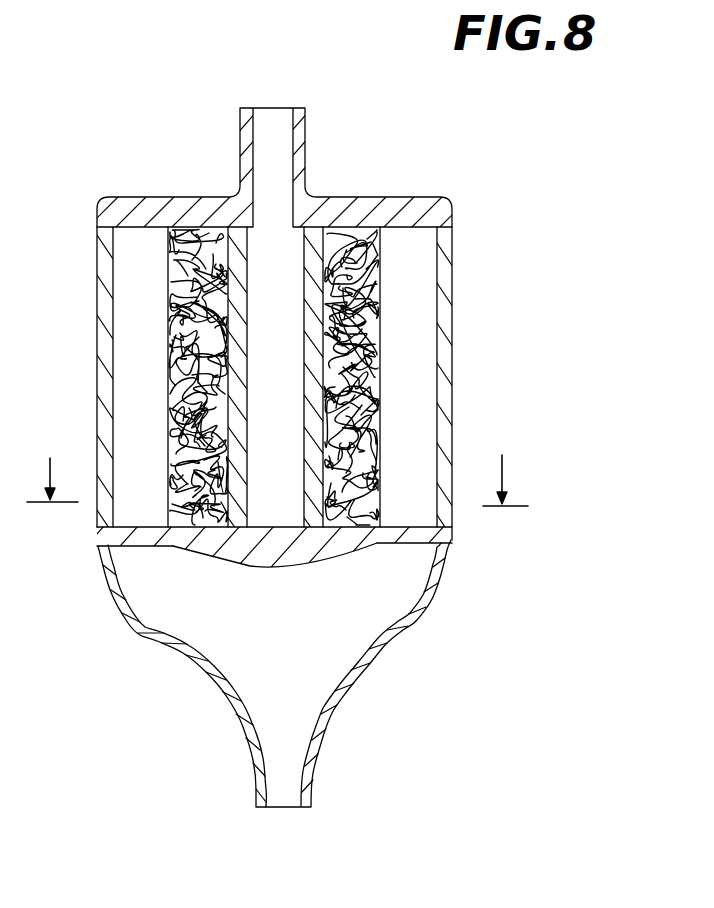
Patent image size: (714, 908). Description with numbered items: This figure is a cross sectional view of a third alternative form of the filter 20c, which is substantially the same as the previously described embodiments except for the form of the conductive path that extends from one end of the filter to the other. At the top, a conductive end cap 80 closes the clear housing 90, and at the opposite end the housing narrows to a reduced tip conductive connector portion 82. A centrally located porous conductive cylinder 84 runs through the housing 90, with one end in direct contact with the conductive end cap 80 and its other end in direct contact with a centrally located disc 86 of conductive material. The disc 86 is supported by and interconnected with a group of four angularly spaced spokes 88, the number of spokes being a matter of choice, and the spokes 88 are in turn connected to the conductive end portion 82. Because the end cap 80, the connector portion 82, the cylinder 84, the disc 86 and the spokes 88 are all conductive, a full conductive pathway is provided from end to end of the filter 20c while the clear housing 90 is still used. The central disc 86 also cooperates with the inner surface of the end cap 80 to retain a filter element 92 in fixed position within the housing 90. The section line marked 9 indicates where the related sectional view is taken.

The filter 20c is at (500, 204).
The end cap 80 is at (315, 210).
The reduced tip conductive connector portion 82 is at (318, 748).
The porous conductive cylinder 84 is at (232, 238).
The disc 86 is at (292, 551).
The spokes 88 is at (407, 540).
The housing 90 is at (438, 376).
The filter element 92 is at (373, 348).
The section line 9- 9 is at (277, 499).